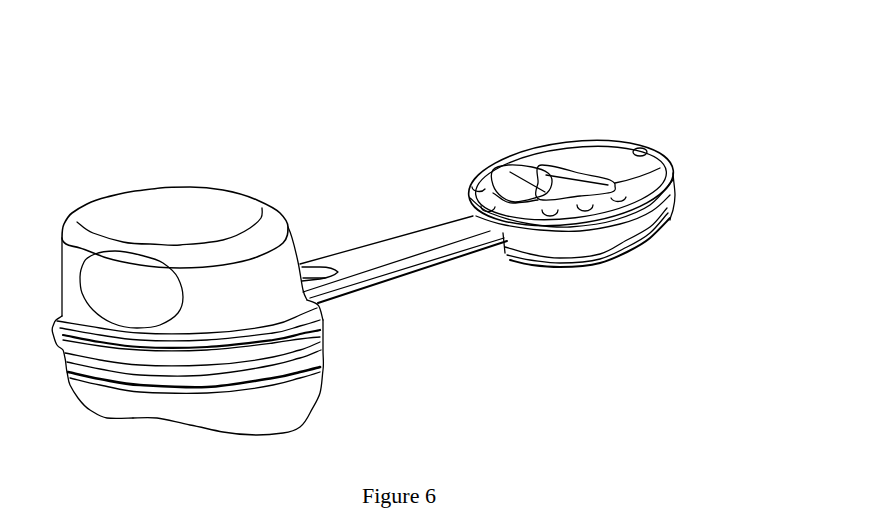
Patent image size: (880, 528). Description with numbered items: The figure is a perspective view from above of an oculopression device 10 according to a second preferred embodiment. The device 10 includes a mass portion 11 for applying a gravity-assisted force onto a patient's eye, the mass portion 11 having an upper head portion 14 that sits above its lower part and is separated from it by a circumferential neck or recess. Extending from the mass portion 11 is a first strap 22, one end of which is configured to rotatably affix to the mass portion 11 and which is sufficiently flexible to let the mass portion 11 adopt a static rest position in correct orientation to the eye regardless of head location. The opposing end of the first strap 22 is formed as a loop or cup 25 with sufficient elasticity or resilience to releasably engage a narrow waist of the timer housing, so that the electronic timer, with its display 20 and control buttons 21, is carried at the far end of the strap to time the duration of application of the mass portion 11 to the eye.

The oculopression device 10 is at (460, 333).
The mass portion 11 is at (140, 438).
The head portion 14 is at (107, 200).
The display 20 is at (598, 148).
The control buttons 21 is at (522, 185).
The first strap 22 is at (400, 233).
The loop or cup 25 is at (675, 195).